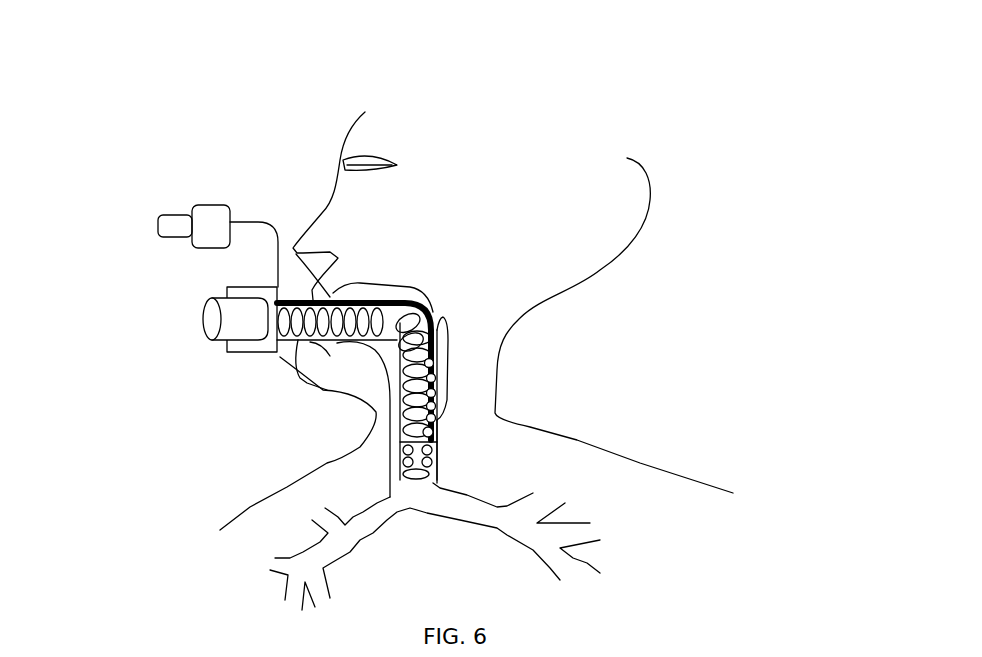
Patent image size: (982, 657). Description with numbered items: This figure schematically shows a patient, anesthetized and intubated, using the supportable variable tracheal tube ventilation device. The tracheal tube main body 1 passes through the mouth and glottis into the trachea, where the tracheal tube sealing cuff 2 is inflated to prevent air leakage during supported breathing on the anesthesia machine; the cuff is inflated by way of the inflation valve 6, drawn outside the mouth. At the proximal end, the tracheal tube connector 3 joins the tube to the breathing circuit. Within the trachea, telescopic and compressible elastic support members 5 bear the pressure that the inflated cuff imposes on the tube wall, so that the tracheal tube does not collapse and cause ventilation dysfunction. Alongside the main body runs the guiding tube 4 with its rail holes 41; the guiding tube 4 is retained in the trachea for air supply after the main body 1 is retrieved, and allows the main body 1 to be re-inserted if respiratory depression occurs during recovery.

The tracheal tube main body 1 is at (330, 298).
The tracheal tube sealing cuff 2 is at (207, 320).
The tracheal tube connector 3 is at (390, 430).
The guiding tube 4 is at (433, 410).
The elastic support members 5 is at (433, 313).
The inflation valve 6 is at (202, 215).
The rail holes 41 is at (433, 447).